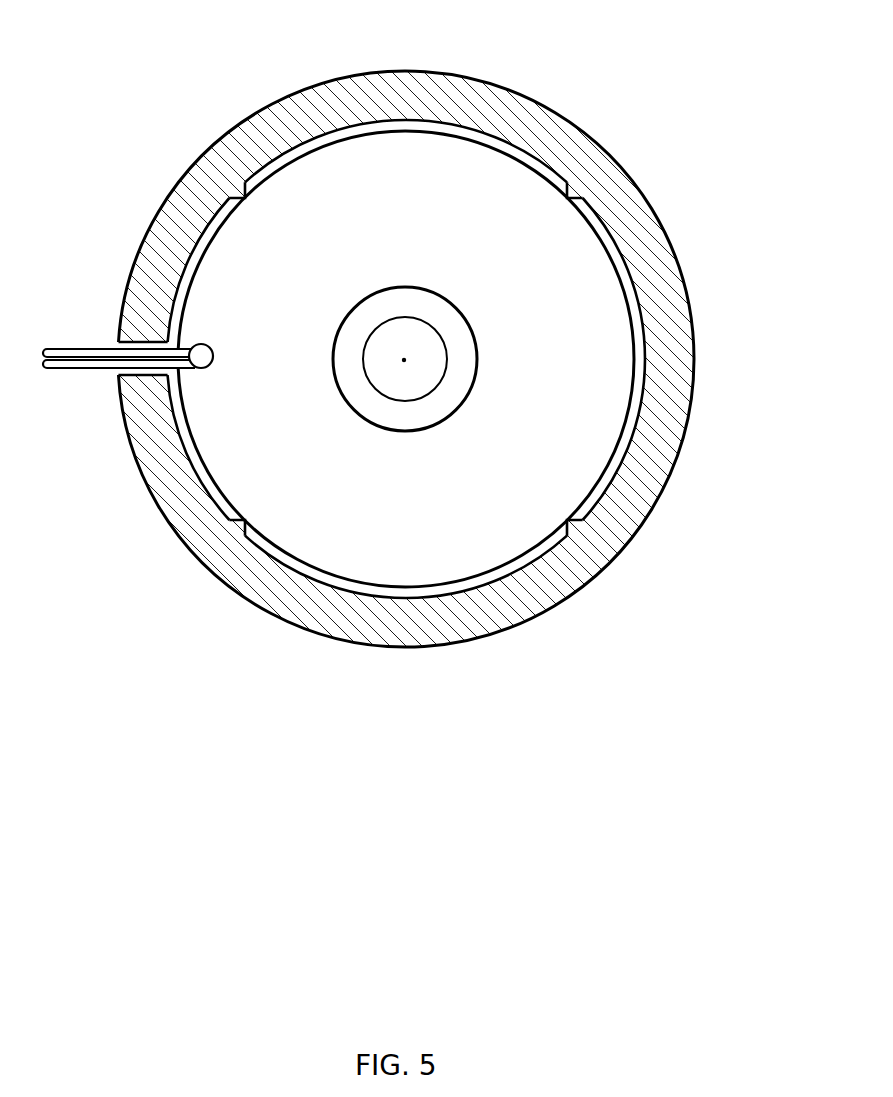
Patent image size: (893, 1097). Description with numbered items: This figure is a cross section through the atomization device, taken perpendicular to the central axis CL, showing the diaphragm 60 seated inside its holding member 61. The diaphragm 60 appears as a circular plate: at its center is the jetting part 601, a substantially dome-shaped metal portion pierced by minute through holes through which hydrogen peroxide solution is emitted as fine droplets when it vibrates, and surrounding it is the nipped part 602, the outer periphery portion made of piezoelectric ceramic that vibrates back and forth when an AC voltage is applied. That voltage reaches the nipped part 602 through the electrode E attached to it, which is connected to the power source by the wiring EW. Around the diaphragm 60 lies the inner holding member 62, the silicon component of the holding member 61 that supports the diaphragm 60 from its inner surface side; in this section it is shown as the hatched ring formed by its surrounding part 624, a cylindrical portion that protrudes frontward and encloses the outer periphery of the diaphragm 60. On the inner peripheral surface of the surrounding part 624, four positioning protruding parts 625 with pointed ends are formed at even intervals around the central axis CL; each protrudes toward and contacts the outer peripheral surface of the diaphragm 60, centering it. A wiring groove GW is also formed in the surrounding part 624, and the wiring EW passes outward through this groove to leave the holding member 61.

The diaphragm 60 is at (462, 366).
The jetting part 601 is at (410, 323).
The nipped part 602 is at (393, 550).
The holding member 61 is at (456, 361).
The inner holding member 62 is at (456, 361).
The surrounding part 624 is at (569, 148).
The positioning protruding part 625 is at (573, 532).
The central axis CL is at (406, 359).
The wiring EW is at (81, 349).
The wiring groove GW is at (122, 369).
The electrode E is at (202, 362).